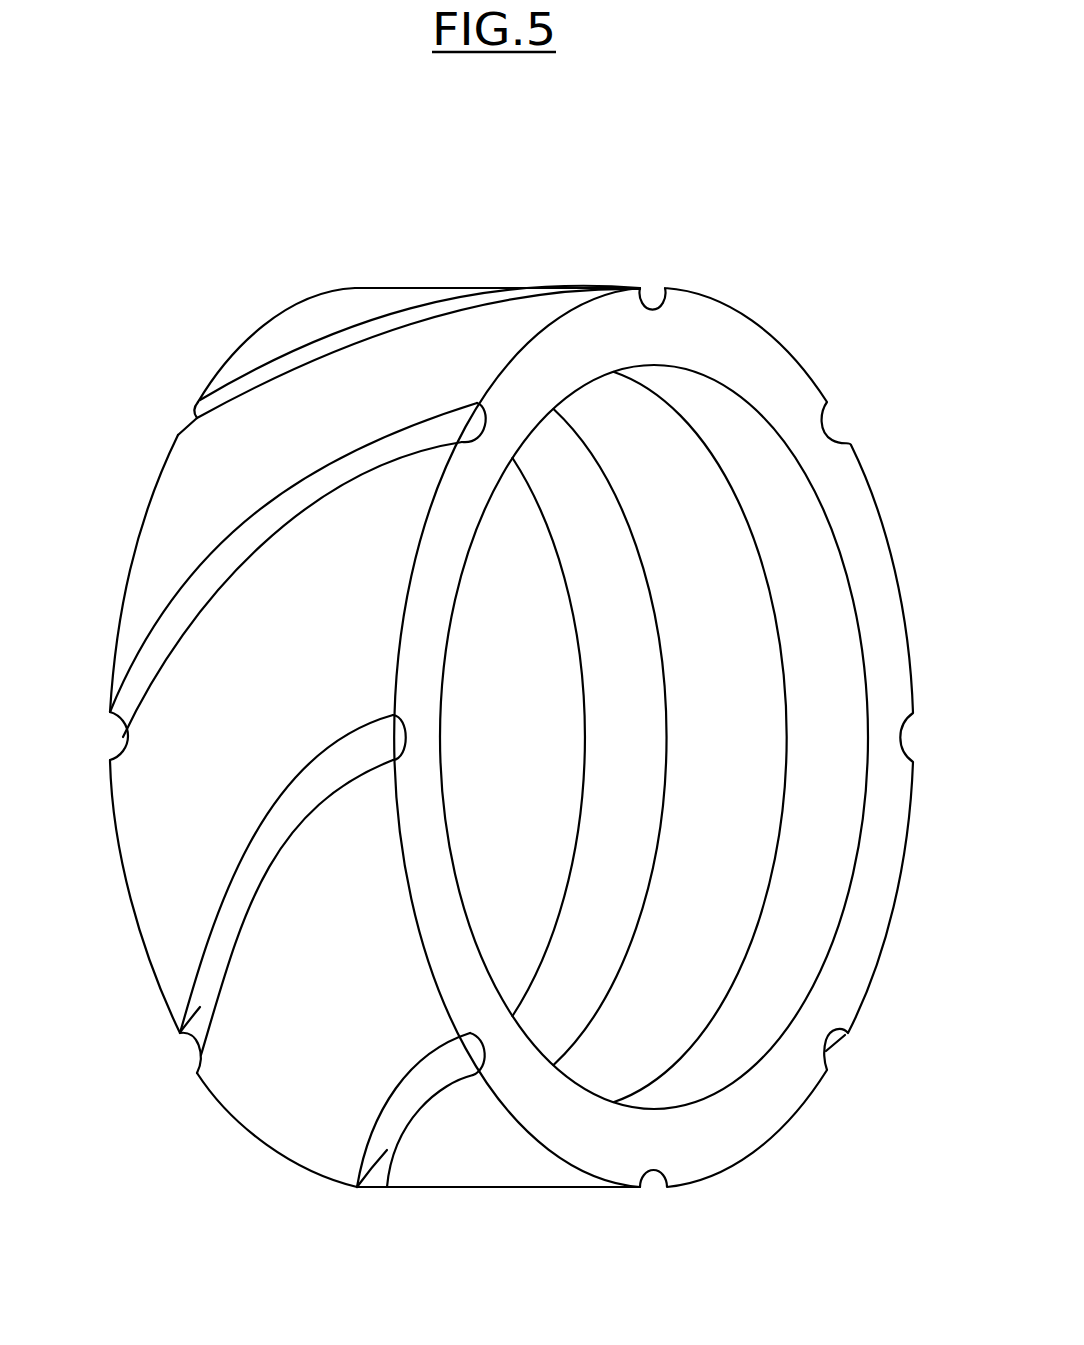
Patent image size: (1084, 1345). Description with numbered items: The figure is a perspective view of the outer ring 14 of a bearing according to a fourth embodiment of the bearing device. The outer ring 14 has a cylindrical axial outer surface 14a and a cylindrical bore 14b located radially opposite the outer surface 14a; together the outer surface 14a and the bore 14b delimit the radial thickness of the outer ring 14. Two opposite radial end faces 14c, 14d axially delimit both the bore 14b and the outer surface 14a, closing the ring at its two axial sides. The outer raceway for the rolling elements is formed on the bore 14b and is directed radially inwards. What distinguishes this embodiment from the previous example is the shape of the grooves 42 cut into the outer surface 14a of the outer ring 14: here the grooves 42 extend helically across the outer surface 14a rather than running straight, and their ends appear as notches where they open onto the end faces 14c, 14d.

The outer ring 14 is at (594, 214).
The cylindrical axial outer surface 14a is at (388, 297).
The cylindrical bore 14b is at (793, 538).
The radial end face 14c is at (128, 569).
The radial end face 14d is at (853, 973).
The groove 42 is at (653, 297).